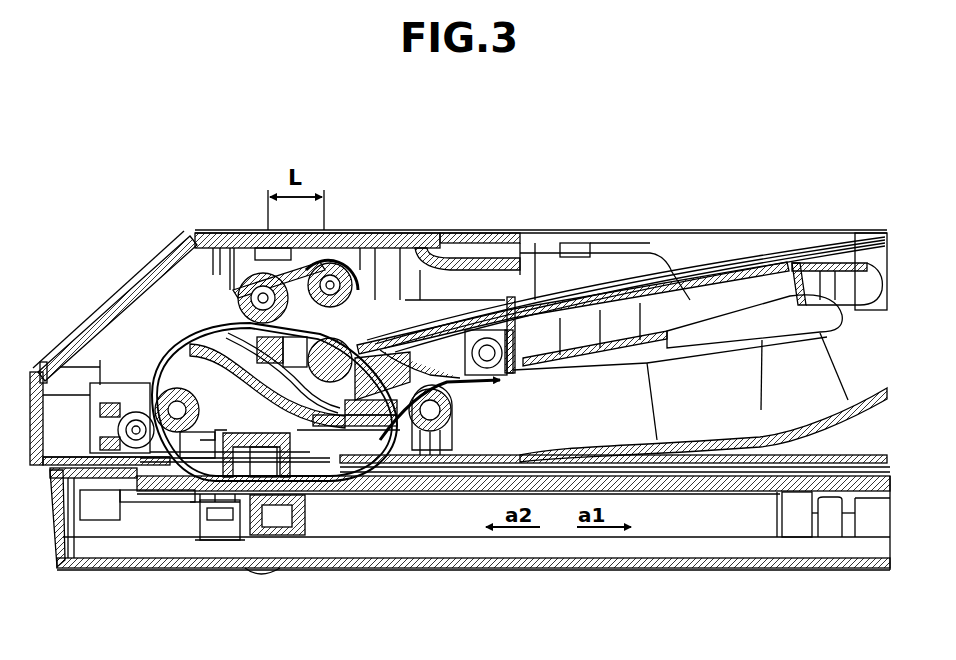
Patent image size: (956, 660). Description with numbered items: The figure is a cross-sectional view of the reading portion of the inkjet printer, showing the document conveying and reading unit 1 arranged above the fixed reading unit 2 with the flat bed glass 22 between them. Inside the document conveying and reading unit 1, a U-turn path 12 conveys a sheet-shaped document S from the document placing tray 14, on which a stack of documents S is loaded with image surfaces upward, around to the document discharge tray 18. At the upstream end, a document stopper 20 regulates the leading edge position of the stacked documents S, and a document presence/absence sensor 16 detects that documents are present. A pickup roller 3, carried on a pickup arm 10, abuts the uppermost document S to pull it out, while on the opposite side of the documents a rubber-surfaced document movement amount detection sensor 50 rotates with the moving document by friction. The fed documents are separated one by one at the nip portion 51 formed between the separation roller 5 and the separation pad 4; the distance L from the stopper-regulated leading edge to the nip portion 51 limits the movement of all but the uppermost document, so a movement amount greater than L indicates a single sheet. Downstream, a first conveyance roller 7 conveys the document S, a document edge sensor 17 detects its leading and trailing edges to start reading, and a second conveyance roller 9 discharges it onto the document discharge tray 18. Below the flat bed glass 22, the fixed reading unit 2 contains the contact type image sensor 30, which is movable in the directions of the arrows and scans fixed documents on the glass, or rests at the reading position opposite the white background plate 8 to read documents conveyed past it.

The document conveying and reading unit 1 is at (197, 200).
The fixed reading unit 2 is at (725, 518).
The pickup roller 3 is at (330, 362).
The separation pad 4 is at (337, 438).
The separation roller 5 is at (257, 303).
The first conveyance roller 7 is at (160, 390).
The white background plate 8 is at (252, 478).
The second conveyance roller 9 is at (438, 432).
The pickup arm 10 is at (277, 270).
The U-turn path 12 is at (163, 360).
The document placing tray 14 is at (530, 305).
The document presence/absence sensor 16 is at (403, 280).
The document edge sensor 17 is at (190, 475).
The document discharge tray 18 is at (565, 425).
The document stopper 20 is at (325, 262).
The flat bed glass 22 is at (548, 480).
The contact type image sensor 30 is at (273, 505).
The document movement amount detection sensor 50 is at (400, 443).
The nip portion 51 is at (157, 463).
The document S is at (672, 300).